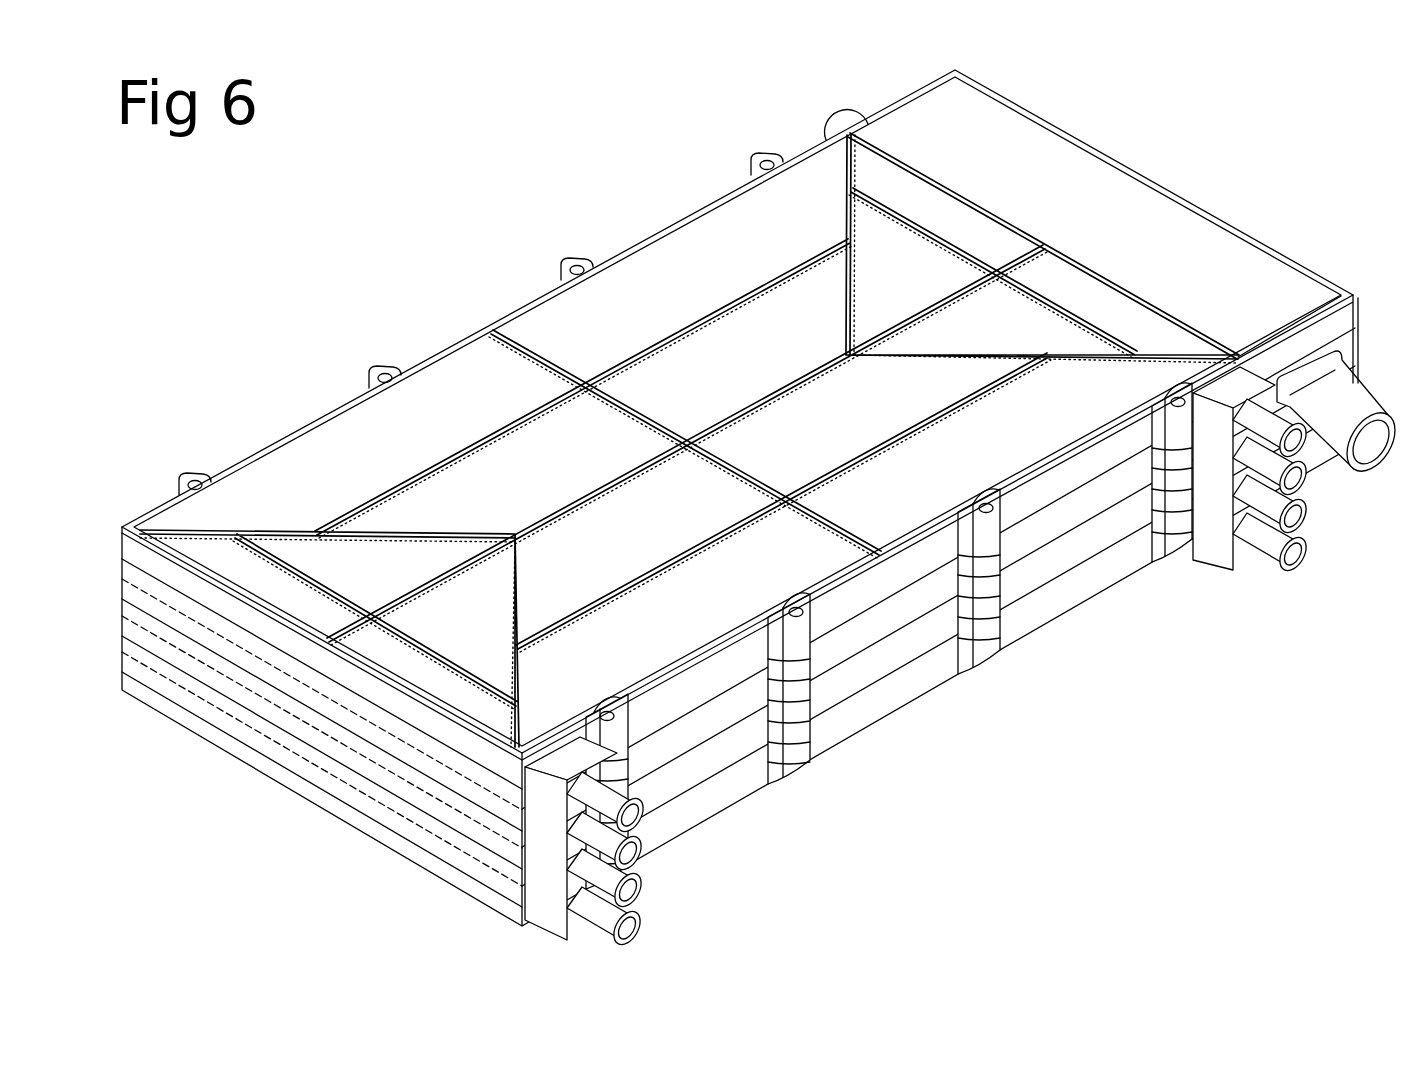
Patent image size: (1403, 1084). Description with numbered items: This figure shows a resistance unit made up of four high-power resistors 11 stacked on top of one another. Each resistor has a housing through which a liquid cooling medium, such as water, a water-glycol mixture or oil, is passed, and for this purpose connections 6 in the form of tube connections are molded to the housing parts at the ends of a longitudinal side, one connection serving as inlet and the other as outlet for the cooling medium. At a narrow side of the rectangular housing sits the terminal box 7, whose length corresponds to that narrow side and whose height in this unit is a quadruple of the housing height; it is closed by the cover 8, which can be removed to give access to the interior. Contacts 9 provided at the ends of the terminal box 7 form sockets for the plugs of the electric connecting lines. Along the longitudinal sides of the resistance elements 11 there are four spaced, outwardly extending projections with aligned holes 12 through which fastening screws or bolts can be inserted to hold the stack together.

The connections 6 is at (643, 920).
The terminal box 7 is at (1305, 300).
The cover 8 is at (1203, 197).
The contacts 9 is at (1380, 472).
The high-power resistors 11 is at (302, 788).
The holes 12 is at (198, 482).